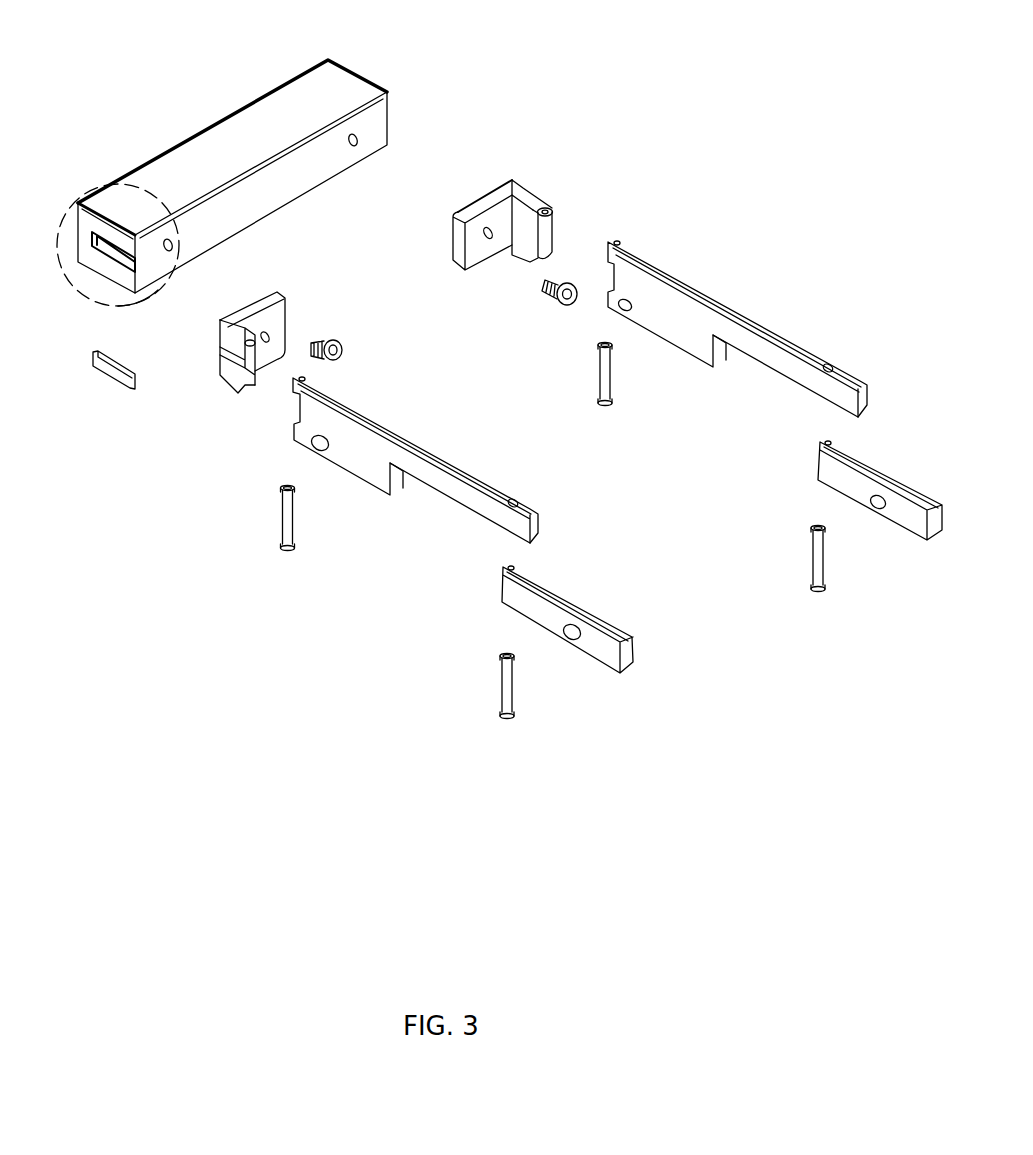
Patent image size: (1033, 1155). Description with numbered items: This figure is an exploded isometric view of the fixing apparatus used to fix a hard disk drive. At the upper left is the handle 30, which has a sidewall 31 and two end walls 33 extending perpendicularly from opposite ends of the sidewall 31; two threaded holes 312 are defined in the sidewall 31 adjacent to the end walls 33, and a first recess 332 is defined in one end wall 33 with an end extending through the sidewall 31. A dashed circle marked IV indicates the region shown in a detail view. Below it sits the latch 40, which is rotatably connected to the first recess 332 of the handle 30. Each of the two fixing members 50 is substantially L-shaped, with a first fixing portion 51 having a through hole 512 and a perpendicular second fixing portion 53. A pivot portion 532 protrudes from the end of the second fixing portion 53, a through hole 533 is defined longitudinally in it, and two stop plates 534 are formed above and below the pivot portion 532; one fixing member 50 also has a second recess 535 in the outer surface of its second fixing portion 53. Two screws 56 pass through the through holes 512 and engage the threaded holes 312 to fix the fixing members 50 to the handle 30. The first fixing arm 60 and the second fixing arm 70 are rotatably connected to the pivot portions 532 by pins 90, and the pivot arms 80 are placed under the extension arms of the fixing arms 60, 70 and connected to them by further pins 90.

The handle 30 is at (325, 90).
The sidewall 31 is at (308, 177).
The threaded hole 312 is at (358, 139).
The end wall 33 is at (85, 228).
The first recess 332 is at (108, 262).
The detail view indicator IV is at (158, 290).
The latch 40 is at (117, 378).
The fixing member 50 is at (498, 176).
The first fixing portion 51 is at (488, 212).
The through hole 512 is at (483, 237).
The second fixing portion 53 is at (527, 240).
The pivot portion 532 is at (543, 233).
The through hole 533 is at (547, 210).
The stop plate 534 is at (543, 207).
The second recess 535 is at (238, 363).
The screw 56 is at (345, 358).
The first fixing arm 60 is at (378, 475).
The second fixing arm 70 is at (702, 343).
The pivot arm 80 is at (602, 643).
The pin 90 is at (820, 558).